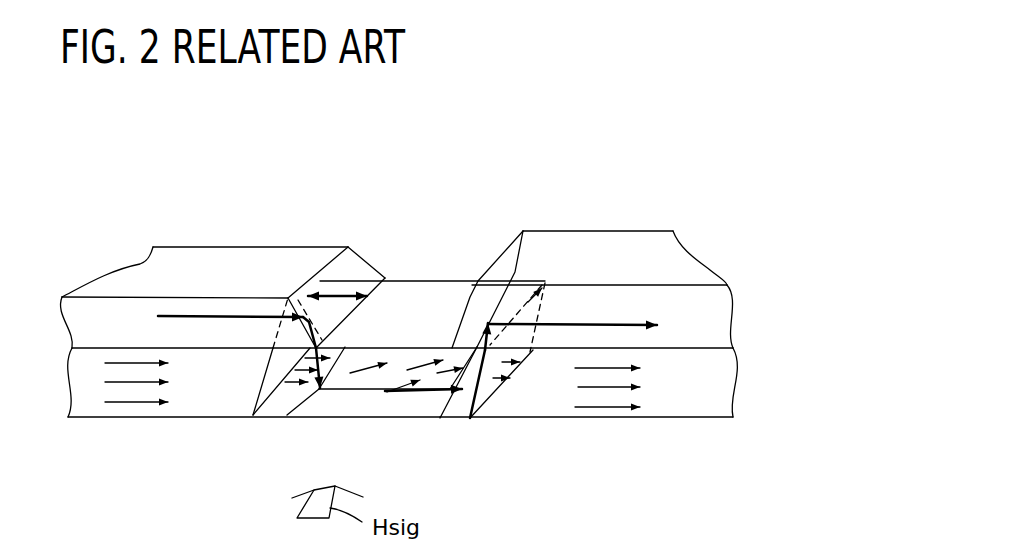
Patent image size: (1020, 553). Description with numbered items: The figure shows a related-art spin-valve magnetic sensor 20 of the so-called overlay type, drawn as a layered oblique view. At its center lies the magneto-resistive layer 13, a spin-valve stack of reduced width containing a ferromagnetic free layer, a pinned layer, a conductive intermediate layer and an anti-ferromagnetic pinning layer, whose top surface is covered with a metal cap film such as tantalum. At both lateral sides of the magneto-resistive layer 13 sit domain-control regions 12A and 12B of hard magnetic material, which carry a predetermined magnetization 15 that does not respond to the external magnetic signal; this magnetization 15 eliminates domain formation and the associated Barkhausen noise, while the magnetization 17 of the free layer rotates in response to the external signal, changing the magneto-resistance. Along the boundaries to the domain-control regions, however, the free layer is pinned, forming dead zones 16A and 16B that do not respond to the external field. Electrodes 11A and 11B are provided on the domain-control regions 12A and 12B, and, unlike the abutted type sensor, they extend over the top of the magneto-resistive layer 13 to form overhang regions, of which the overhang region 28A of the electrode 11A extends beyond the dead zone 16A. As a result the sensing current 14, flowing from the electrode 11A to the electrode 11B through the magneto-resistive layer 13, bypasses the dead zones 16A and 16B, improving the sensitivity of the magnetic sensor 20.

The spin-valve magnetic sensor 20 is at (552, 158).
The electrode 11A is at (650, 247).
The electrode 11B is at (202, 258).
The domain-control region 12A is at (529, 400).
The domain-control region 12B is at (207, 398).
The magneto-resistive layer 13 is at (403, 305).
The sensing current 14 is at (197, 317).
The magnetization 15 is at (114, 404).
The dead zone 16A is at (462, 398).
The dead zone 16B is at (280, 398).
The magnetization of the free layer 17 is at (403, 367).
The overhang region 28A is at (347, 285).